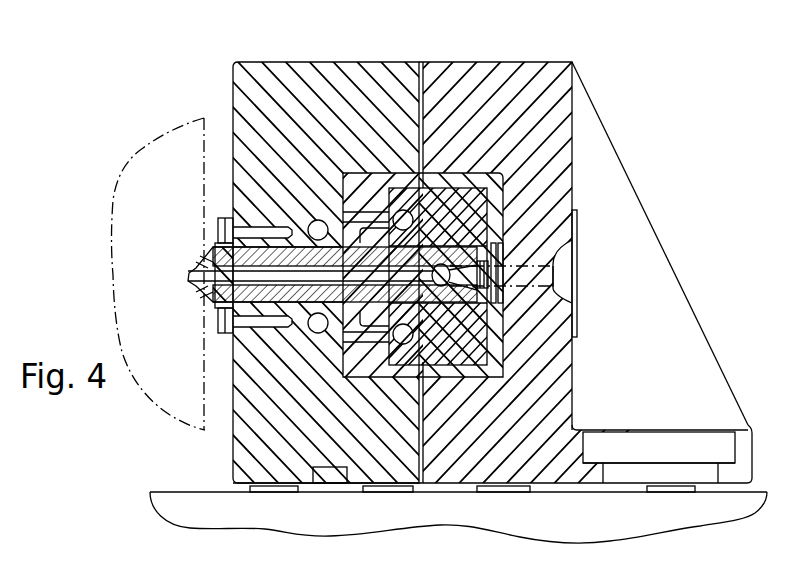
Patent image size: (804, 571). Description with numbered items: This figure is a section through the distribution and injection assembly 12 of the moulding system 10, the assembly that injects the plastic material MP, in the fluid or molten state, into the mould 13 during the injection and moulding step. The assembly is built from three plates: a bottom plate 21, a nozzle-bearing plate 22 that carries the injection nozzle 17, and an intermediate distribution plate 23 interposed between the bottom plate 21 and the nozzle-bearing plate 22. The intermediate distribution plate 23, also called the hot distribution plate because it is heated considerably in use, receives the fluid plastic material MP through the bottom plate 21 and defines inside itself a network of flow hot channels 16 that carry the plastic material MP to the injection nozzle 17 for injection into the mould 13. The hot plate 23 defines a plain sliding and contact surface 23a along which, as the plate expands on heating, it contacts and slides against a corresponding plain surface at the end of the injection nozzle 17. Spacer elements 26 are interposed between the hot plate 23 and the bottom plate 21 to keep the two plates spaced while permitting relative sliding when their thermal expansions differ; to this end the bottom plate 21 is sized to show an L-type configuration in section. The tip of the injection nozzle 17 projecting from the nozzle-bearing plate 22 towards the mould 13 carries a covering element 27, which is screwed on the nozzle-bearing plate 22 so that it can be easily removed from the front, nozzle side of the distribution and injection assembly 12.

The moulding system 10 is at (655, 100).
The distribution and injection assembly 12 is at (195, 82).
The mould 13 is at (125, 163).
The flow hot channels 16 is at (547, 296).
The injection nozzle 17 is at (213, 248).
The bottom plate 21 is at (497, 70).
The nozzle-bearing plate 22 is at (295, 77).
The intermediate distribution plate 23 is at (480, 202).
The sliding and contact surface 23a is at (372, 340).
The spacer element 26 is at (549, 252).
The covering element 27 is at (210, 298).
The plastic material MP is at (577, 273).